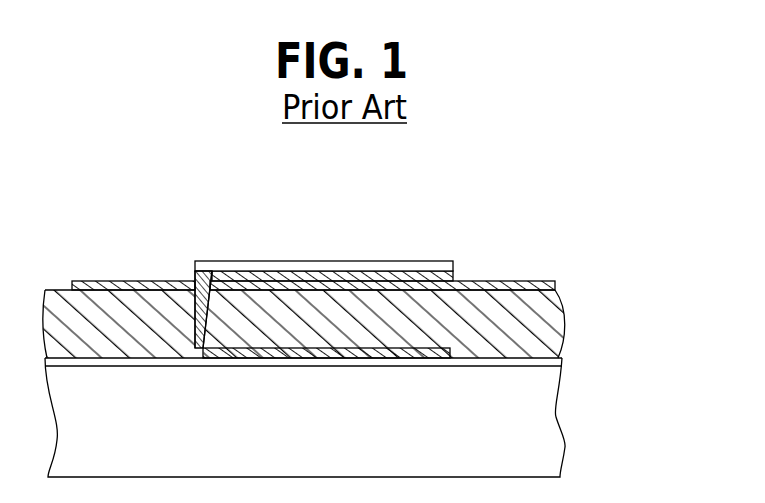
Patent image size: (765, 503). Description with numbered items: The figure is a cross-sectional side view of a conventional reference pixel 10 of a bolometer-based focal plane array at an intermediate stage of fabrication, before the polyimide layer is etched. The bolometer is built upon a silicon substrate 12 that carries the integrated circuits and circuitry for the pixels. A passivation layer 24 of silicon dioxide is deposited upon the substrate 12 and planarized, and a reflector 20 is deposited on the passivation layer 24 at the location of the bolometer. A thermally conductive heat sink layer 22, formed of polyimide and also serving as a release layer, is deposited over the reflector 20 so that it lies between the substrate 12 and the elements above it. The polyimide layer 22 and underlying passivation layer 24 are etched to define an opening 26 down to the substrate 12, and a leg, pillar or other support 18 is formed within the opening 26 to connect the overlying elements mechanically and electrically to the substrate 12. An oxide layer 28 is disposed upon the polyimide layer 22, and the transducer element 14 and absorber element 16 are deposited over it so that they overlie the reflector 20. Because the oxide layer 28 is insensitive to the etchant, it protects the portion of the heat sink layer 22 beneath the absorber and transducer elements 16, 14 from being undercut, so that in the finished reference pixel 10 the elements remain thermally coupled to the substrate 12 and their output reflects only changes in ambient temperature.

The reference pixel 10 is at (578, 208).
The substrate 12 is at (555, 442).
The transducer element 14 is at (453, 273).
The absorber element 16 is at (342, 264).
The legs, pillars or other supports 18 is at (193, 287).
The reflector 20 is at (360, 352).
The thermally conductive heat sink layer 22 is at (552, 322).
The passivation layer 24 is at (563, 359).
The opening 26 is at (187, 321).
The oxide layer 28 is at (547, 281).